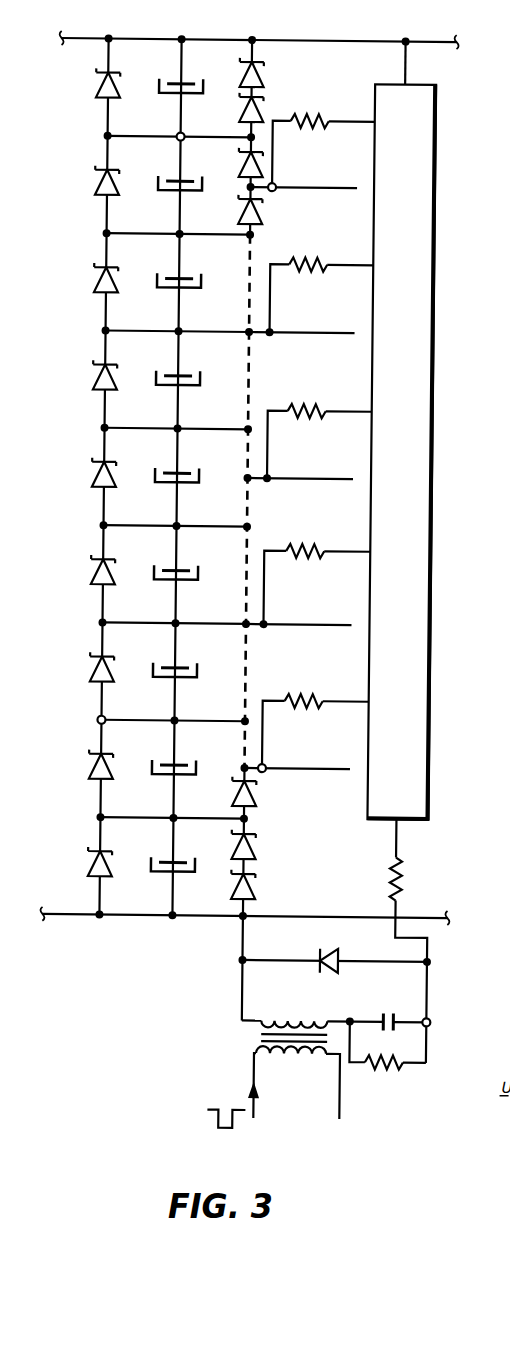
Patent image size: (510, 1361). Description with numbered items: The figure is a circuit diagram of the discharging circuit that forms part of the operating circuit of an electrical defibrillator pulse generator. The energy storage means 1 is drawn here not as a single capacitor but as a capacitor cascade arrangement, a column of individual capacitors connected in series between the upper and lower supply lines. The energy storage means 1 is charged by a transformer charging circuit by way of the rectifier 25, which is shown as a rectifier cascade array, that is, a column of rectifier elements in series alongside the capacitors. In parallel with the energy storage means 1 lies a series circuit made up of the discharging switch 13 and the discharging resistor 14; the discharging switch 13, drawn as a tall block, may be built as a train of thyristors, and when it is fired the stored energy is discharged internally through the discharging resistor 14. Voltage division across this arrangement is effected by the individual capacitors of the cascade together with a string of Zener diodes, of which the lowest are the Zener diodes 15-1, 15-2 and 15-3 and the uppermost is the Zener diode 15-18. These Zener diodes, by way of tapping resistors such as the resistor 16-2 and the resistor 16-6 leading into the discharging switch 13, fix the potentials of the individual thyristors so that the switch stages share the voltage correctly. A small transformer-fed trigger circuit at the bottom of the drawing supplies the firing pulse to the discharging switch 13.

The energy storage means 1 is at (165, 83).
The rectifier 25 is at (94, 85).
The discharging switch 13 is at (434, 127).
The discharging resistor 14 is at (396, 877).
The Zener diode 15-1 is at (258, 881).
The Zener diode 15-2 is at (258, 843).
The Zener diode 15-3 is at (258, 789).
The Zener diode 15-18 is at (261, 61).
The resistor 16-2 is at (311, 697).
The resistor 16-6 is at (322, 117).